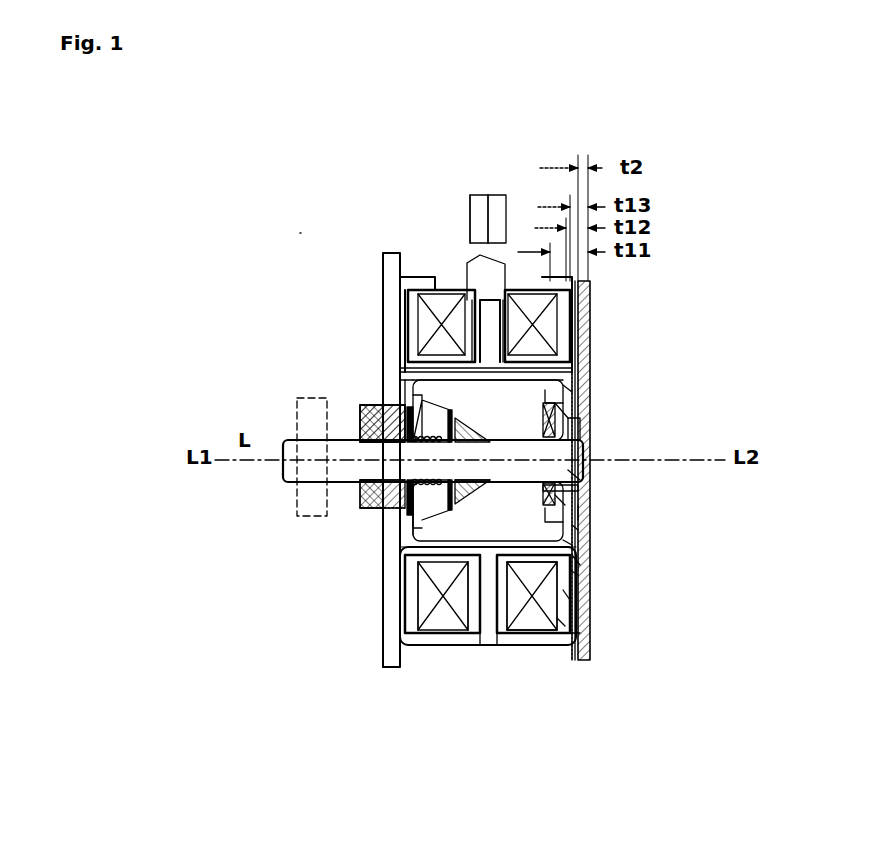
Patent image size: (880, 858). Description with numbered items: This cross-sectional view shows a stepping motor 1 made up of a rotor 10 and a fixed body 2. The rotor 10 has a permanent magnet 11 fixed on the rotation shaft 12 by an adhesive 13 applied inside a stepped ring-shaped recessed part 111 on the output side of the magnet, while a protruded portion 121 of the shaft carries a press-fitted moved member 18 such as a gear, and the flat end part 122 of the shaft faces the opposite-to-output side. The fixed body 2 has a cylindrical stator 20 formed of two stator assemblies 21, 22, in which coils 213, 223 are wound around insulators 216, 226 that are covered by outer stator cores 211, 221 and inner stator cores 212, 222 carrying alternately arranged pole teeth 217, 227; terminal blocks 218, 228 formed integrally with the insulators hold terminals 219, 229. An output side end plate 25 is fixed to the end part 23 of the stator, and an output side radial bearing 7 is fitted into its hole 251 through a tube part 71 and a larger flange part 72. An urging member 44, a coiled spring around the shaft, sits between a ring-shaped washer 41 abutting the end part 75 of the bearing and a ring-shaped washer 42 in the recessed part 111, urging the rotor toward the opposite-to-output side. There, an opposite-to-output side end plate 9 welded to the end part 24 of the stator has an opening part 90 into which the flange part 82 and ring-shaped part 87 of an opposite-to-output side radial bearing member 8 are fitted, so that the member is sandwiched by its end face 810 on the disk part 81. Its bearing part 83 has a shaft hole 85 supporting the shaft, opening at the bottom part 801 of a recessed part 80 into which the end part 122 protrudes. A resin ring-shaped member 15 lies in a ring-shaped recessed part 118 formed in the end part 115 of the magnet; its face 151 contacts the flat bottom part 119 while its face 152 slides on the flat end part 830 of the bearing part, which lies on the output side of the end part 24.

The stepping motor 1 is at (310, 230).
The fixed body 2 is at (386, 249).
The output side radial bearing 7 is at (357, 437).
The opposite-to-output side radial bearing member 8 is at (588, 377).
The opposite-to-output side end plate 9 is at (583, 640).
The rotor 10 is at (320, 606).
The permanent magnet 11 is at (415, 540).
The rotation shaft 12 is at (383, 478).
The adhesive 13 is at (472, 430).
The ring-shaped member 15 is at (405, 590).
The moved member 18 is at (293, 503).
The stator 20 is at (575, 690).
The stator assembly 21 is at (478, 650).
The stator assembly 22 is at (575, 650).
The end part 23 is at (400, 297).
The end part 24 is at (580, 565).
The output side end plate 25 is at (390, 667).
The ring-shaped washer 41 is at (400, 347).
The ring-shaped washer 42 is at (450, 425).
The urging member 44 is at (432, 434).
The tube part 71 is at (398, 417).
The flange part 72 is at (368, 400).
The end part 75 is at (370, 434).
The recessed part 80 is at (582, 432).
The disk part 81 is at (560, 555).
The flange part 82 is at (588, 337).
The bearing part 83 is at (545, 433).
The shaft hole 85 is at (545, 487).
The ring-shaped part 87 is at (560, 502).
The opening part 90 is at (583, 515).
The ring-shaped recessed part 111 is at (420, 529).
The end part 115 is at (560, 388).
The ring-shaped recessed part 118 is at (548, 512).
The bottom part 119 is at (540, 415).
The portion 121 is at (290, 470).
The end part 122 is at (583, 452).
The face 151 is at (540, 494).
The face 152 is at (553, 492).
The stator core 211 is at (413, 570).
The stator core 212 is at (470, 573).
The coil 213 is at (430, 602).
The insulator 216 is at (416, 626).
The pole teeth 217 is at (447, 368).
The terminal block 218 is at (477, 253).
The terminal 219 is at (478, 202).
The stator core 221 is at (580, 638).
The stator core 222 is at (560, 622).
The coil 223 is at (562, 595).
The insulator 226 is at (578, 570).
The pole teeth 227 is at (532, 360).
The terminal block 228 is at (495, 200).
The terminal 229 is at (497, 245).
The hole 251 is at (400, 400).
The bottom part 801 is at (580, 480).
The end face 810 is at (563, 540).
The end part 830 is at (550, 412).